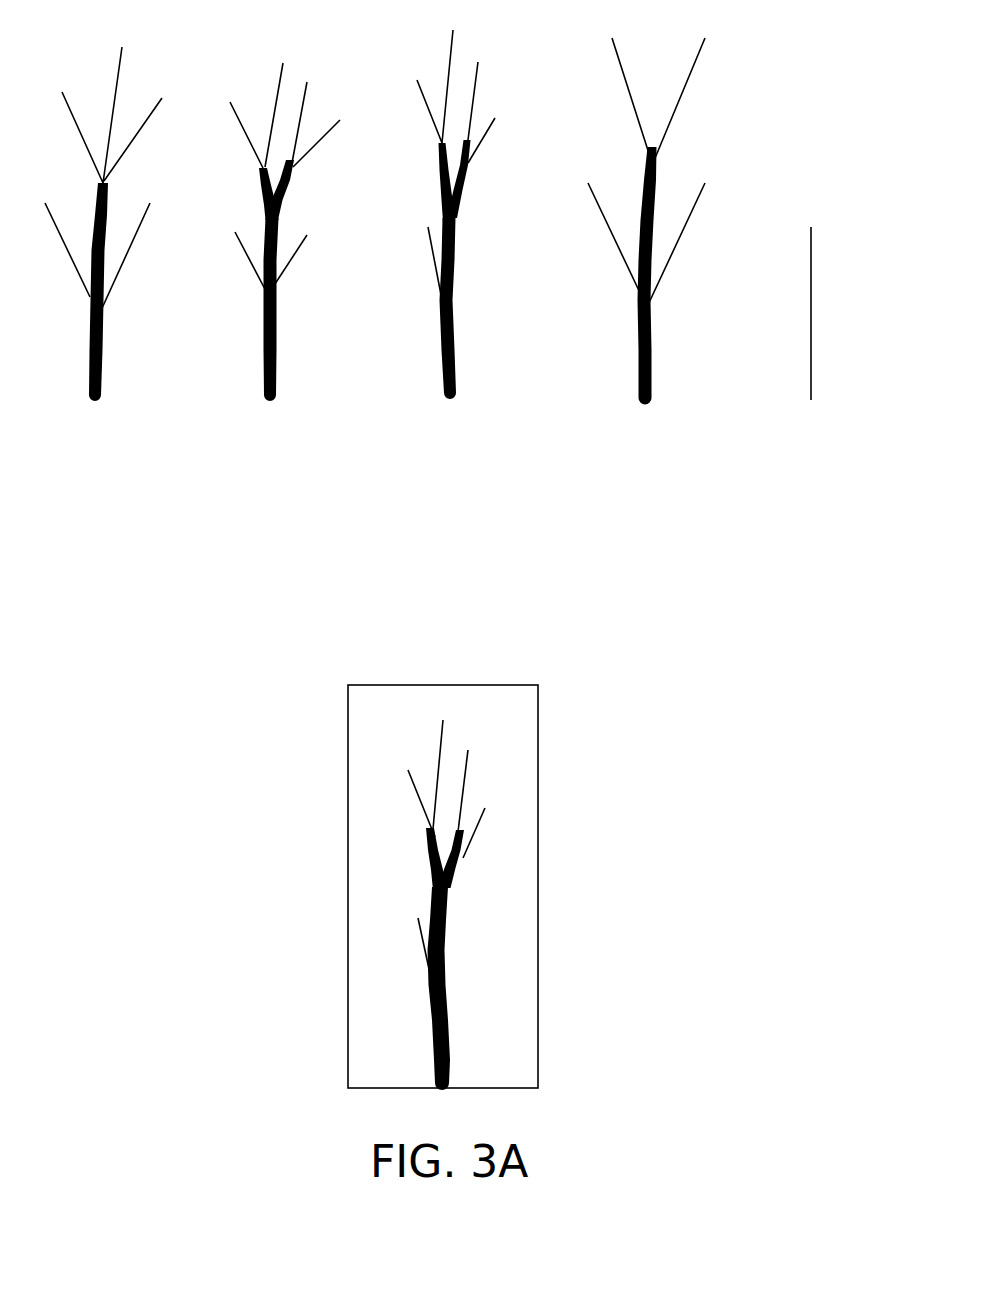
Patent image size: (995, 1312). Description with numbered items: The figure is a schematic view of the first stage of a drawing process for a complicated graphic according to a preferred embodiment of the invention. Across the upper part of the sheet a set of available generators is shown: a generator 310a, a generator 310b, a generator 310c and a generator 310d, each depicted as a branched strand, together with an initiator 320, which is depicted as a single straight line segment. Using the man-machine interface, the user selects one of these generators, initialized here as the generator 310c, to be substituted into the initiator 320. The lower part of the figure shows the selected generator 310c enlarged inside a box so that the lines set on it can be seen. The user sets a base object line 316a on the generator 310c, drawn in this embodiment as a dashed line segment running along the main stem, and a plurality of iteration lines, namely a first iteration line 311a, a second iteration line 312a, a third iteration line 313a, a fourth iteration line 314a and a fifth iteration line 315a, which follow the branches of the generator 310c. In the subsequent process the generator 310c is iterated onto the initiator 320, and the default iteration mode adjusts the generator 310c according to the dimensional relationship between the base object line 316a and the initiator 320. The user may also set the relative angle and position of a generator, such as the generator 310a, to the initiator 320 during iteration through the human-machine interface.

The generator 310a is at (102, 350).
The generator 310b is at (275, 353).
The generator 310c is at (453, 355).
The generator 310d is at (652, 357).
The initiator 320 is at (812, 353).
The iteration line 311a is at (443, 720).
The iteration line 312a is at (465, 775).
The iteration line 313a is at (468, 842).
The iteration line 314a is at (413, 790).
The iteration line 315a is at (423, 948).
The base object line 316a is at (442, 1018).